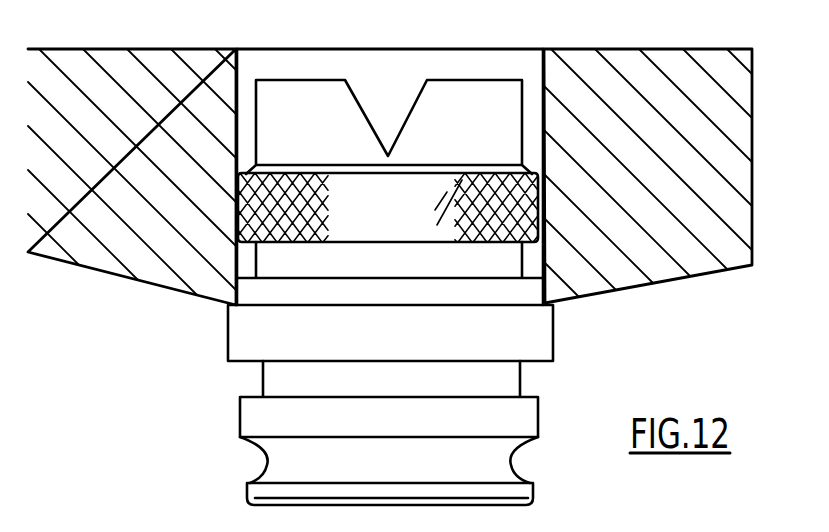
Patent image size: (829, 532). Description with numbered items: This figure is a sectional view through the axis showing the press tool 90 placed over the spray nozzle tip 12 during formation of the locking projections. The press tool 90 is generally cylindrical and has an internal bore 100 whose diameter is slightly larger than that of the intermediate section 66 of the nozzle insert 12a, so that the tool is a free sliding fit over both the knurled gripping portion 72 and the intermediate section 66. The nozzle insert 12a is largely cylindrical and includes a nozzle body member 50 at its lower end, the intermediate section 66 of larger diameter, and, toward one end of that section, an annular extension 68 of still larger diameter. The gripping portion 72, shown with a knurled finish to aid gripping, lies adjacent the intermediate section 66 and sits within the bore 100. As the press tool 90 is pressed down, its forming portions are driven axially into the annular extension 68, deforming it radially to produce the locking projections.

The spray nozzle tip 12 is at (282, 90).
The nozzle insert 12a is at (527, 418).
The nozzle body member 50 is at (252, 462).
The intermediate section 66 is at (267, 295).
The annular extension 68 is at (537, 331).
The gripping portion 72 is at (358, 190).
The press tool 90 is at (735, 183).
The internal bore 100 is at (543, 73).